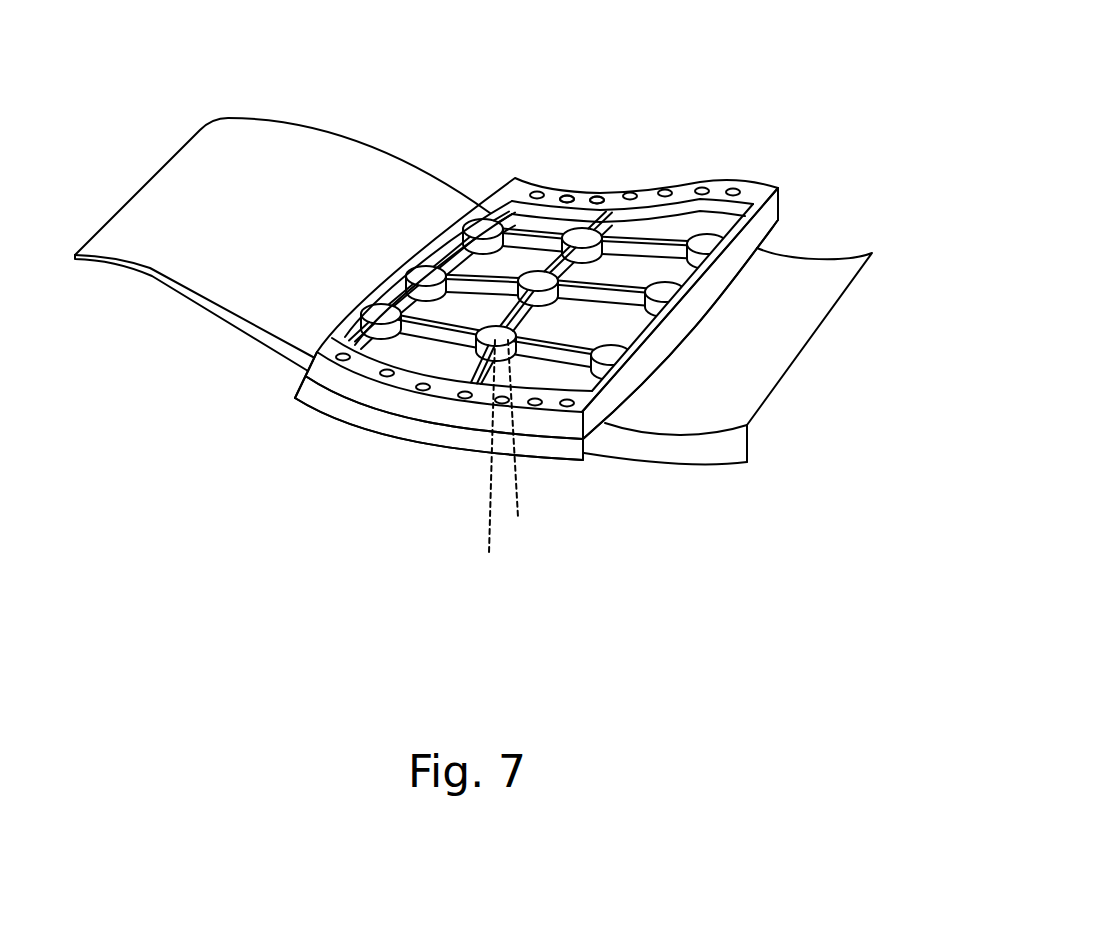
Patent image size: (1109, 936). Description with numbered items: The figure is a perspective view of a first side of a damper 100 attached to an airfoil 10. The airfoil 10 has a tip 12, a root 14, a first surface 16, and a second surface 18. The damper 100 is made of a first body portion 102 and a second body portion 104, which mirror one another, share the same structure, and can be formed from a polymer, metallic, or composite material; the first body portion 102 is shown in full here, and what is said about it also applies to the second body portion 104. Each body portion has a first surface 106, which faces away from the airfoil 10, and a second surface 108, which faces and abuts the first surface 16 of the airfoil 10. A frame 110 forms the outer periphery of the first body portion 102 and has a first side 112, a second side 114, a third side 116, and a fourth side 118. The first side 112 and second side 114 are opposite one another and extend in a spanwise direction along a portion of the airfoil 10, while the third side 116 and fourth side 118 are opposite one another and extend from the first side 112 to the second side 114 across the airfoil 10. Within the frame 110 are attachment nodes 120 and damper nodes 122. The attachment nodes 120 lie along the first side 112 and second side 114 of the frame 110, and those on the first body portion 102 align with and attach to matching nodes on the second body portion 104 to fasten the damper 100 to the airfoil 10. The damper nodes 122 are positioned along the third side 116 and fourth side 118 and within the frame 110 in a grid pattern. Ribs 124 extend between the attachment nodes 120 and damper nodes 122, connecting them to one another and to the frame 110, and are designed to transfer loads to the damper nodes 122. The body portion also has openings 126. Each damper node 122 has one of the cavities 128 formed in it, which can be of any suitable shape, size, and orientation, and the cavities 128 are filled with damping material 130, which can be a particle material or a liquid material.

The airfoil 10 is at (363, 82).
The tip 12 is at (148, 183).
The root 14 is at (832, 331).
The first surface 16 is at (251, 151).
The second surface 18 is at (157, 275).
The damper 100 is at (673, 106).
The first body portion 102 is at (735, 183).
The second body portion 104 is at (318, 410).
The first surface 106 is at (549, 195).
The second surface 108 is at (526, 255).
The frame 110 is at (772, 212).
The first side 112 is at (583, 194).
The second side 114 is at (403, 381).
The third side 116 is at (393, 278).
The fourth side 118 is at (612, 262).
The attachment nodes 120 is at (443, 392).
The damper nodes 122 is at (507, 333).
The ribs 124 is at (598, 330).
The openings 126 is at (603, 330).
The cavities 128 is at (522, 441).
The damping material 130 is at (486, 462).